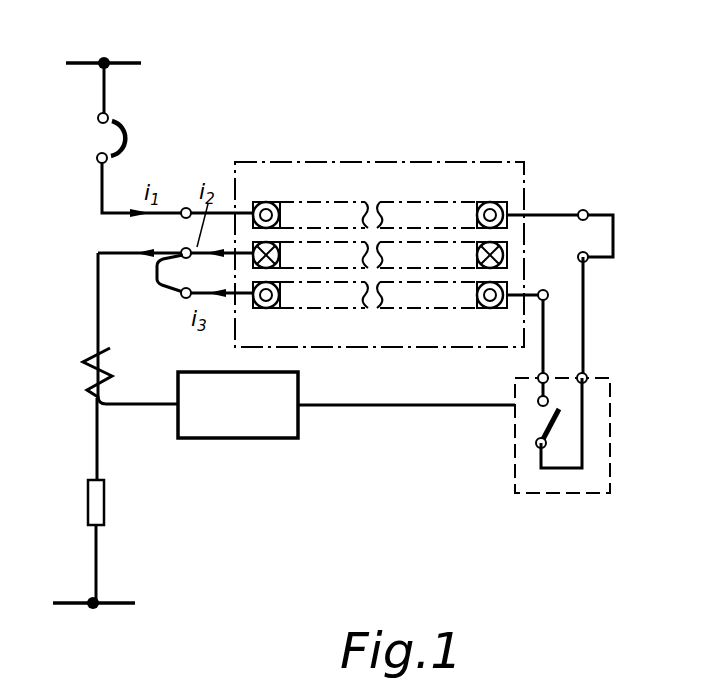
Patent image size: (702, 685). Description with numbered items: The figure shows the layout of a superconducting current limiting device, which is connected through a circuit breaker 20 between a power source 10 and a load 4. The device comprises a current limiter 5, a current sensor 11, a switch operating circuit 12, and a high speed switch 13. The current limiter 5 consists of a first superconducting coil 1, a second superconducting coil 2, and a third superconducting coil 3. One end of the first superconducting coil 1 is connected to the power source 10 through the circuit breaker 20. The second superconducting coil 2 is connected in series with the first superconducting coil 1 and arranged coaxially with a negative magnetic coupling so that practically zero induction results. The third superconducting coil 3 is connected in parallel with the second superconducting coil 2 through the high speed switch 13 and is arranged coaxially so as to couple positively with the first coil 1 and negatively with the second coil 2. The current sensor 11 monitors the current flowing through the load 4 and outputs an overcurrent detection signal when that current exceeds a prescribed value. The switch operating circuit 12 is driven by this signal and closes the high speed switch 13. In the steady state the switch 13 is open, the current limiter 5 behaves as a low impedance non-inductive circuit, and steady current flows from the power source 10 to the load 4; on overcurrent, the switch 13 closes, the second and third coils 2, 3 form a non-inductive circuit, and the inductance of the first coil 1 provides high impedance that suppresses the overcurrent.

The first superconducting coil 1 is at (302, 200).
The second superconducting coil 2 is at (347, 270).
The third superconducting coil 3 is at (383, 307).
The load 4 is at (88, 494).
The current limiter 5 is at (395, 162).
The power source 10 is at (84, 62).
The current sensor 11 is at (84, 382).
The switch operating circuit 12 is at (278, 440).
The high speed switch 13 is at (565, 495).
The circuit breaker 20 is at (127, 134).